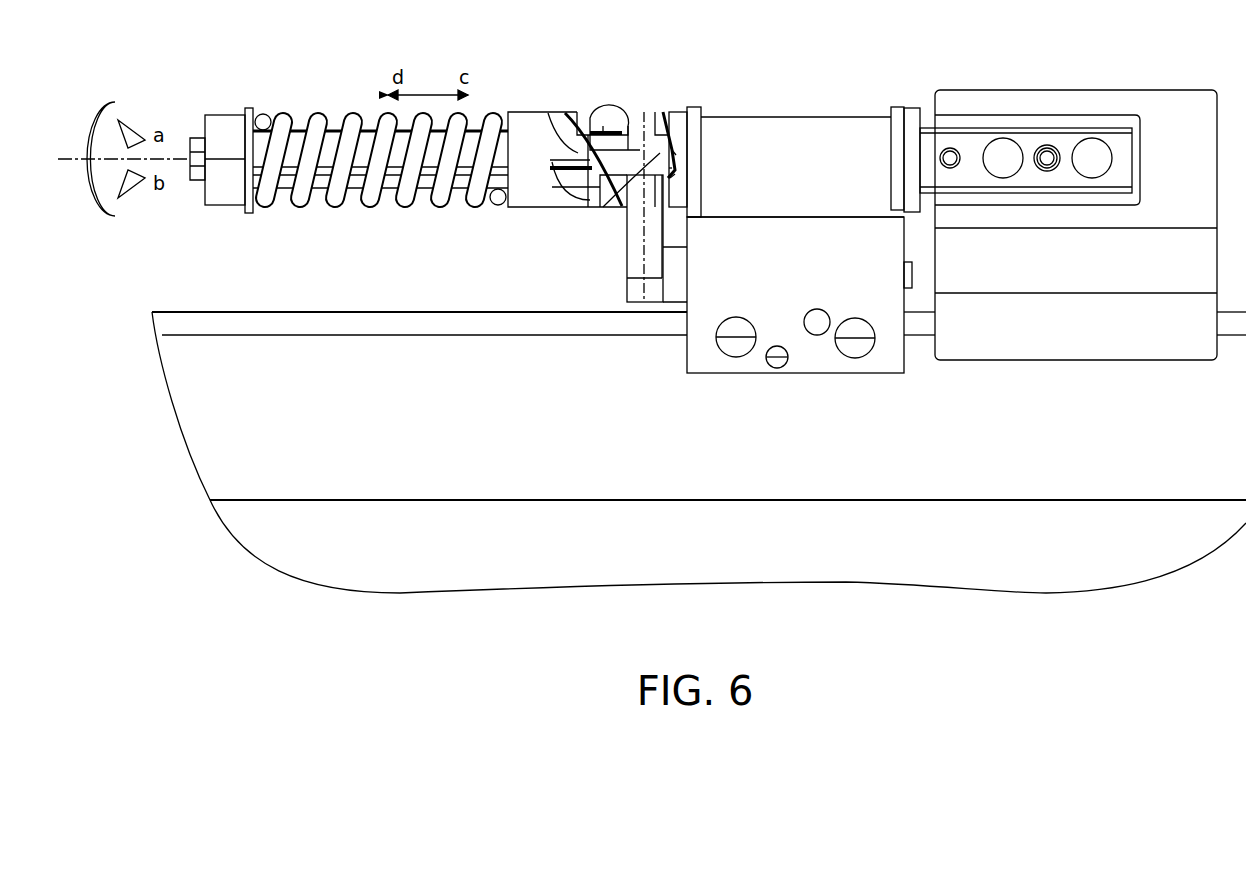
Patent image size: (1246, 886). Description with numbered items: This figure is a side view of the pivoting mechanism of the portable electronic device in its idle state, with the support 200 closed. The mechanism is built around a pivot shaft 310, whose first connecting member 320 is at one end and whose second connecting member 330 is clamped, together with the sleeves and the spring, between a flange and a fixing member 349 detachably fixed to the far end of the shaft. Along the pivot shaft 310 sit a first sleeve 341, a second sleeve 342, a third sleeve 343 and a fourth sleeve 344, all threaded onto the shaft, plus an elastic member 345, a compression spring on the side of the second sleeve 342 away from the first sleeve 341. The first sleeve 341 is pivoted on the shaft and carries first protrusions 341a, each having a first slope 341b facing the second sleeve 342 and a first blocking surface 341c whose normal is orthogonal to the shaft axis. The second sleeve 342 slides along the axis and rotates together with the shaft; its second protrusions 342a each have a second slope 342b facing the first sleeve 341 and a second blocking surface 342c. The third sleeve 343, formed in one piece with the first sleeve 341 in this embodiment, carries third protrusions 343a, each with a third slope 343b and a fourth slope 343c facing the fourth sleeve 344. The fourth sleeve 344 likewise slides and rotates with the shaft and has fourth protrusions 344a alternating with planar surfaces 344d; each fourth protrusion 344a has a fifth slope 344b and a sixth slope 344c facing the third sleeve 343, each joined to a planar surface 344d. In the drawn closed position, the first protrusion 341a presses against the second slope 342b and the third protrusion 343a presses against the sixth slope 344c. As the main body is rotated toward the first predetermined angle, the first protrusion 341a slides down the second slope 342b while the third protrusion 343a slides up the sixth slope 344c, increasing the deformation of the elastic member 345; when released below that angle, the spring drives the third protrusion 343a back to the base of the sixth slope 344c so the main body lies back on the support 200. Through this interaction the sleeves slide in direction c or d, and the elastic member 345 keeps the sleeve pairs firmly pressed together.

The support 200 is at (1177, 105).
The pivot shaft 310 is at (336, 138).
The first connecting member 320 is at (1047, 135).
The second connecting member 330 is at (815, 352).
The first sleeve 341 is at (634, 262).
The first protrusion 341a is at (638, 140).
The first slope 341b is at (568, 171).
The first blocking surface 341c is at (603, 130).
The second sleeve 342 is at (527, 130).
The second protrusion 342a is at (577, 152).
The second slope 342b is at (577, 114).
The second blocking surface 342c is at (550, 207).
The third sleeve 343 is at (650, 244).
The third protrusion 343a is at (674, 168).
The third slope 343b is at (677, 152).
The fourth slope 343c is at (676, 175).
The fourth sleeve 344 is at (688, 113).
The fourth protrusion 344a is at (662, 148).
The fifth slope 344b is at (656, 131).
The sixth slope 344c is at (592, 178).
The planar surface 344d is at (678, 118).
The elastic member 345 is at (318, 120).
The fixing member 349 is at (234, 128).